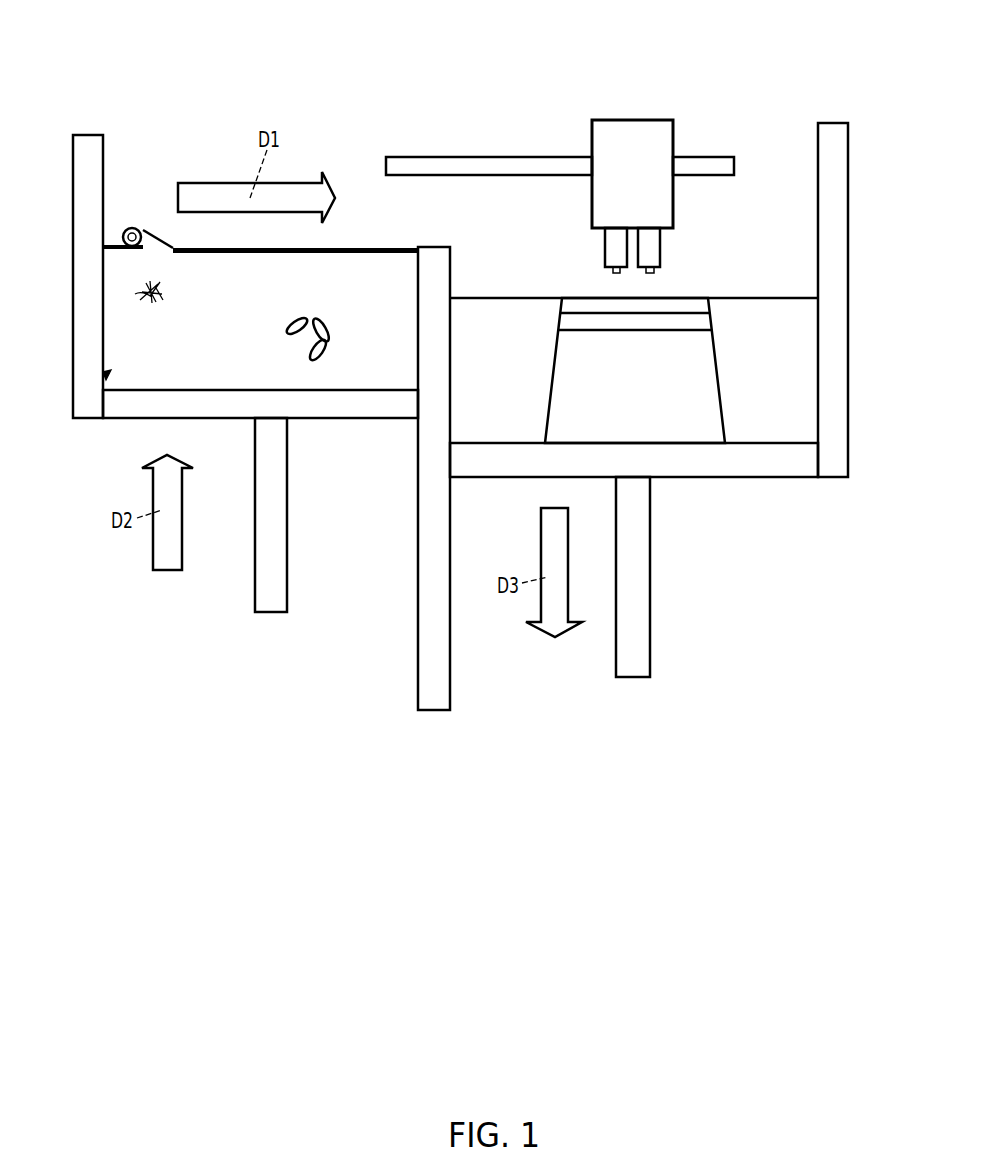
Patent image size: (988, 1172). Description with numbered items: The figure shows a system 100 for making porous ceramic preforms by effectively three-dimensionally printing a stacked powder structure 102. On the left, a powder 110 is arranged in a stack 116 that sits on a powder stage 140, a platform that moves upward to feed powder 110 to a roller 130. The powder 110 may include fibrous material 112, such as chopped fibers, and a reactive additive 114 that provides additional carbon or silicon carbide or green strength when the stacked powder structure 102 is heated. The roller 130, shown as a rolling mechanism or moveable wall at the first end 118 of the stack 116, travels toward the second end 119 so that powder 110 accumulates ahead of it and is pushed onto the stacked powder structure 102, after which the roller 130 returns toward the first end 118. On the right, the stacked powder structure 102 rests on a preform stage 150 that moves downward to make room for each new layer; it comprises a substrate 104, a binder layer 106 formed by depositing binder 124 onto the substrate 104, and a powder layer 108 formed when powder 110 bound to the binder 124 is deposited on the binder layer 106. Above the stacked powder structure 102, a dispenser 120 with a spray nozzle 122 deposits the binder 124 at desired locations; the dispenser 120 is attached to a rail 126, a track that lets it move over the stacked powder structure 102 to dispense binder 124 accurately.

The system 100 is at (509, 98).
The stacked powder structure 102 is at (722, 309).
The substrate 104 is at (668, 425).
The binder layer 106 is at (683, 324).
The powder layer 108 is at (712, 322).
The powder 110 is at (143, 362).
The fibrous material 112 is at (118, 294).
The reactive additive 114 is at (318, 360).
The stack 116 is at (103, 378).
The first end 118 is at (116, 244).
The second end 119 is at (420, 246).
The dispenser 120 is at (675, 192).
The spray nozzle 122 is at (615, 246).
The binder 124 is at (620, 273).
The rail 126 is at (723, 165).
The roller 130 is at (138, 227).
The powder stage 140 is at (246, 405).
The preform stage 150 is at (512, 478).